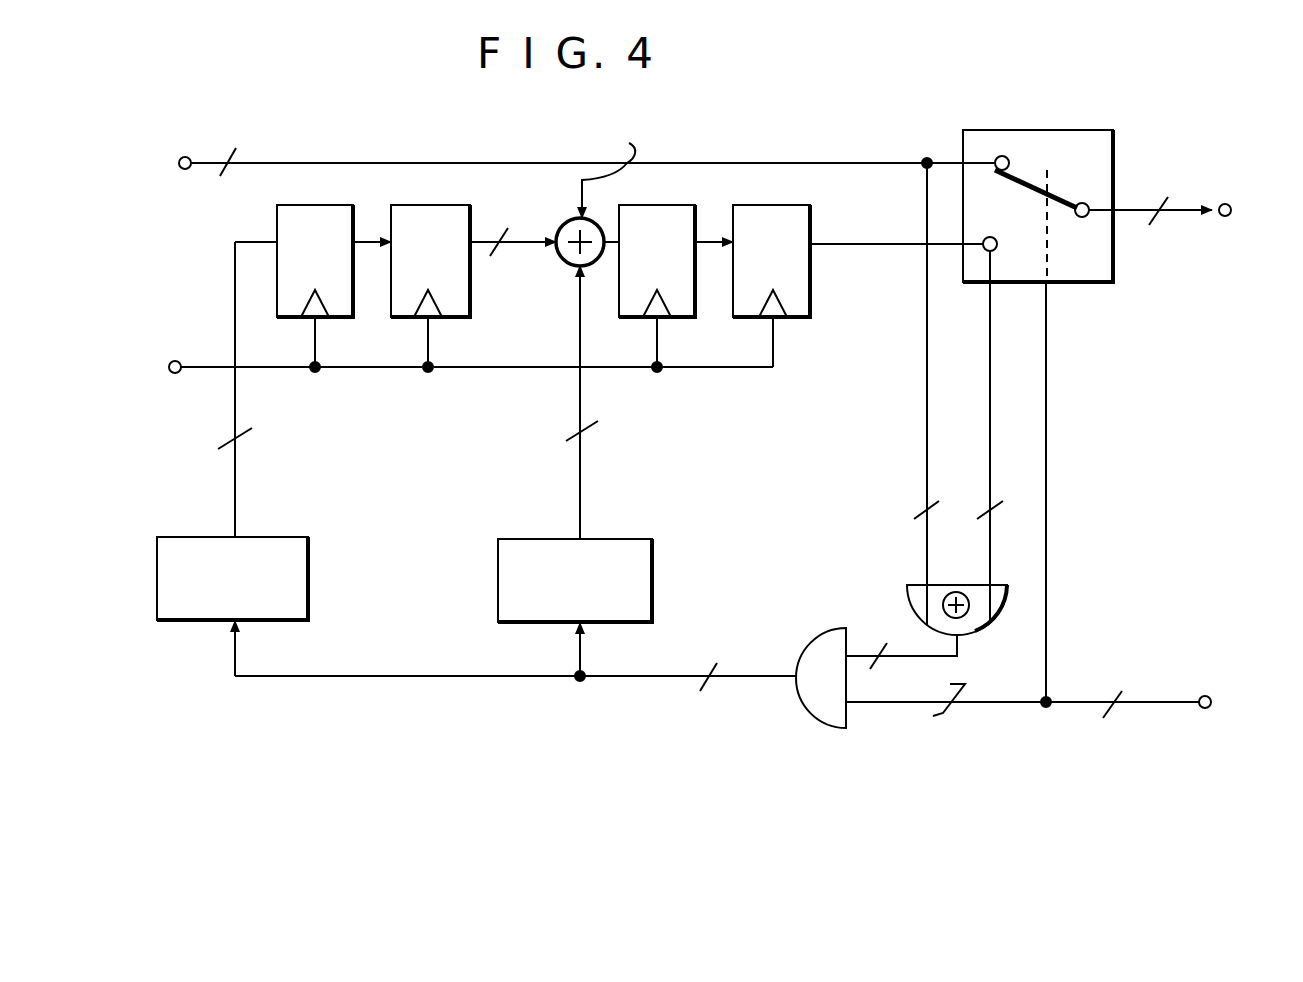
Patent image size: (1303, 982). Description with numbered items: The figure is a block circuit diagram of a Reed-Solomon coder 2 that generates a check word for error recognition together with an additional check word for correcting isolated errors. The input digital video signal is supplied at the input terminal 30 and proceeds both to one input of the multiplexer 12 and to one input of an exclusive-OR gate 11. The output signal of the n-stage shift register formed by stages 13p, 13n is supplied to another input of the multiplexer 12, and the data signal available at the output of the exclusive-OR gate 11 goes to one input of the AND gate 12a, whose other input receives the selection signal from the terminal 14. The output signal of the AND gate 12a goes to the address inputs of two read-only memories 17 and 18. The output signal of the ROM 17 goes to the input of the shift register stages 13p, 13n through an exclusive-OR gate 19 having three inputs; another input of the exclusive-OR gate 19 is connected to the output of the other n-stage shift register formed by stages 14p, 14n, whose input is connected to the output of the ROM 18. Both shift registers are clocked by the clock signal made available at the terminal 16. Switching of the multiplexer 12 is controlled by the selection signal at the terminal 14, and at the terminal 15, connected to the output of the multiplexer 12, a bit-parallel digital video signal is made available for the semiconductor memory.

The Reed-Solomon coder 2 is at (713, 124).
The video data input terminal 30 is at (557, 124).
The clock terminal 16 is at (440, 348).
The first stage of second n-stage shift register 14p is at (354, 306).
The n-th stage of second n-stage shift register 14n is at (497, 332).
The first stage of n-stage shift register 13p is at (696, 306).
The n-th stage of n-stage shift register 13n is at (855, 331).
The exclusive-OR gate 19 is at (560, 222).
The multiplexer 12 is at (1047, 130).
The terminal 15 is at (1179, 171).
The exclusive-OR gate 11 is at (910, 585).
The AND gate 12a is at (825, 628).
The selection signal terminal 14 is at (1049, 508).
The read-only memory 17 is at (653, 562).
The read-only memory 18 is at (310, 580).